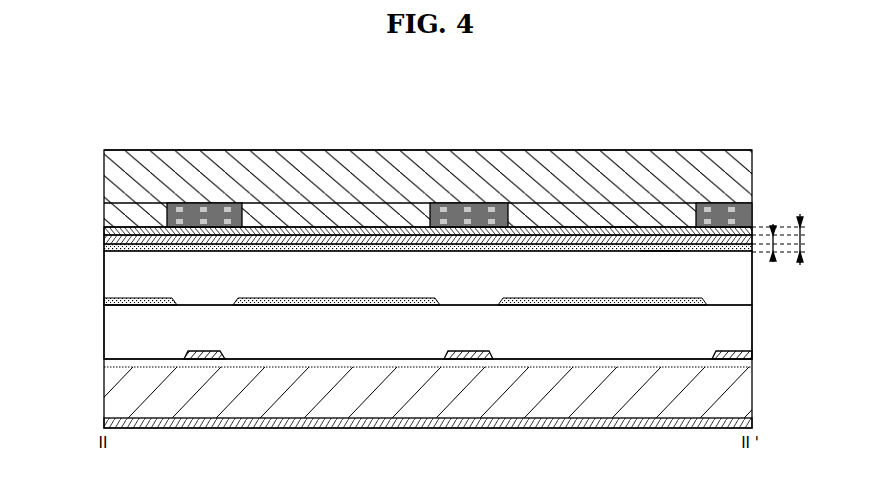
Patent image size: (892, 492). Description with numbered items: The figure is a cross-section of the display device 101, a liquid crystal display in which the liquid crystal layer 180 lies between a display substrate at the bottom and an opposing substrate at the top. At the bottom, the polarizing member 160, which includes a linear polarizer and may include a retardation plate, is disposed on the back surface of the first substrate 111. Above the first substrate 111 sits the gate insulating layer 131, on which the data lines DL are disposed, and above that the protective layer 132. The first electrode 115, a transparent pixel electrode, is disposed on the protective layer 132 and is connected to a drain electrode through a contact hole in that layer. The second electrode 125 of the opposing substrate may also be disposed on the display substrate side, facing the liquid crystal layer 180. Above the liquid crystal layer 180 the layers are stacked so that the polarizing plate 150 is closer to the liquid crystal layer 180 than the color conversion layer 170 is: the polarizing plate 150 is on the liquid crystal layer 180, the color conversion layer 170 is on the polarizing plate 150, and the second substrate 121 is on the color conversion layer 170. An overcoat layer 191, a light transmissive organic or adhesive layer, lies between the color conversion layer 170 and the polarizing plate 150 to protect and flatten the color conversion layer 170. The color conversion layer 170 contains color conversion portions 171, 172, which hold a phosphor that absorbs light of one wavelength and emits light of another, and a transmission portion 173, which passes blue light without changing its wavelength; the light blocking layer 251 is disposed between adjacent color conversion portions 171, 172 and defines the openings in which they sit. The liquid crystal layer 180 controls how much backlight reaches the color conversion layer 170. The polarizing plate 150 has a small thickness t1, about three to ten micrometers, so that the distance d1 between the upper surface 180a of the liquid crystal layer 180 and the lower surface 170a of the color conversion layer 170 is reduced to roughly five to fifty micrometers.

The display device 101 is at (136, 94).
The first substrate 111 is at (112, 392).
The first electrode 115 is at (112, 302).
The second substrate 121 is at (395, 167).
The second electrode 125 is at (104, 247).
The gate insulating layer 131 is at (112, 363).
The protective layer 132 is at (112, 334).
The polarizing plate 150 is at (104, 238).
The polarizing member 160 is at (112, 423).
The color conversion layer 170 is at (97, 208).
The lower surface of color conversion layer 170a is at (603, 226).
The color conversion portion 171 is at (343, 213).
The color conversion portion 172 is at (558, 215).
The transmission portion 173 is at (137, 213).
The liquid crystal layer 180 is at (112, 279).
The upper surface of liquid crystal layer 180a is at (652, 250).
The overcoat layer 191 is at (104, 230).
The light blocking layer 251 is at (205, 215).
The data line DL is at (206, 361).
The thickness t1 is at (779, 243).
The distance d1 is at (808, 239).